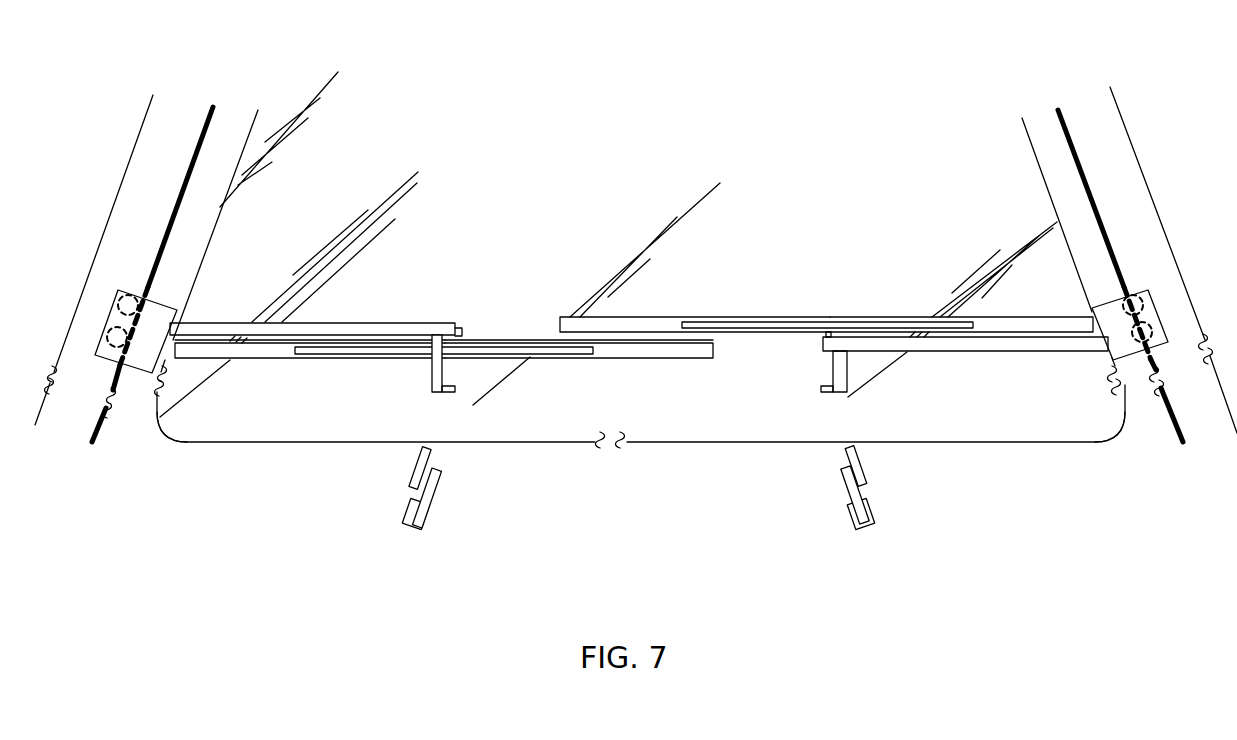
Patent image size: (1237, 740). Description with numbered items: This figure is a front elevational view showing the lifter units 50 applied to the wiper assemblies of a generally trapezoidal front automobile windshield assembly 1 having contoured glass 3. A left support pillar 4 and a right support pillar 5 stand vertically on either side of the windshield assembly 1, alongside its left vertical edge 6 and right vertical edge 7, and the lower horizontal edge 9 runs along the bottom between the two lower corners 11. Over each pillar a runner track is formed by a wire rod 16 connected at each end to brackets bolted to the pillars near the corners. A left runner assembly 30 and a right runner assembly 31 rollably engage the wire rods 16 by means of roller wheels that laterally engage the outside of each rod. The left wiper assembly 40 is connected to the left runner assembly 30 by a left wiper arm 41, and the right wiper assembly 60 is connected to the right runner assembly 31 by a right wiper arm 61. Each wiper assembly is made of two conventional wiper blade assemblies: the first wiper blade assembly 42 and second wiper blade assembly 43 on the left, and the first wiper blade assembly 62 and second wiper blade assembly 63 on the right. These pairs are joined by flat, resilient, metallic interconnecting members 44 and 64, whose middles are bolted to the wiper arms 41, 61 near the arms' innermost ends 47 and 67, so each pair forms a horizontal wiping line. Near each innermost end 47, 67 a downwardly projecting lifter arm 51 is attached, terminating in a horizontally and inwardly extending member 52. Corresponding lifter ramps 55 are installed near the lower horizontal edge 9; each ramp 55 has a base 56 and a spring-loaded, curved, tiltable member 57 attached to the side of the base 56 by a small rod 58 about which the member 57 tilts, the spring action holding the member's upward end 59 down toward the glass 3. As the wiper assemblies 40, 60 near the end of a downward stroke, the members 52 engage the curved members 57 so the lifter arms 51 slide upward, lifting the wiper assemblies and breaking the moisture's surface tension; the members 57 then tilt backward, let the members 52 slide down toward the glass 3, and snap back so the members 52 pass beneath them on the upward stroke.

The windshield assembly 1 is at (617, 529).
The contoured glass 3 is at (546, 197).
The left support pillar 4 is at (1108, 128).
The right support pillar 5 is at (152, 137).
The left vertical edge 6 is at (1032, 150).
The right vertical edge 7 is at (213, 236).
The lower horizontal edge 9 is at (657, 441).
The lower corners 11 is at (175, 433).
The wire rod 16 is at (205, 141).
The left runner assembly 30 is at (1160, 305).
The right runner assembly 31 is at (115, 305).
The left wiper assembly 40 is at (834, 295).
The left wiper arm 41 is at (975, 345).
The first wiper blade assembly 42 is at (1005, 325).
The second wiper blade assembly 43 is at (612, 328).
The interconnecting member 44 is at (743, 325).
The innermost end of left wiper arm 47 is at (822, 340).
The lifter unit 50 is at (368, 408).
The lifter arm 51 is at (400, 378).
The horizontally and inwardly extending member 52 is at (455, 395).
The lifter ramp 55 is at (653, 467).
The base 56 is at (428, 506).
The curved tiltable member 57 is at (414, 468).
The small rod 58 is at (430, 470).
The upward end of curved member 59 is at (425, 443).
The right wiper assembly 60 is at (441, 310).
The right wiper arm 61 is at (313, 330).
The first wiper blade assembly 62 is at (235, 350).
The second wiper blade assembly 63 is at (680, 350).
The interconnecting member 64 is at (485, 348).
The innermost end of right wiper arm 67 is at (457, 325).